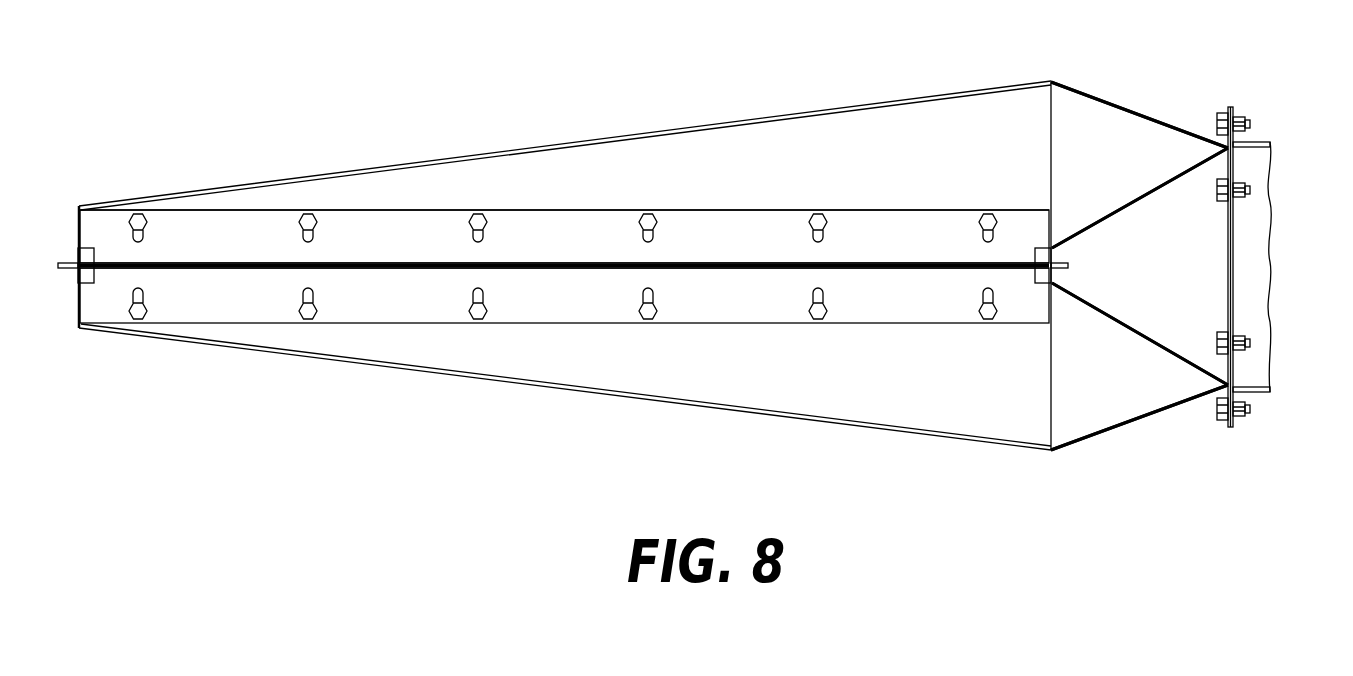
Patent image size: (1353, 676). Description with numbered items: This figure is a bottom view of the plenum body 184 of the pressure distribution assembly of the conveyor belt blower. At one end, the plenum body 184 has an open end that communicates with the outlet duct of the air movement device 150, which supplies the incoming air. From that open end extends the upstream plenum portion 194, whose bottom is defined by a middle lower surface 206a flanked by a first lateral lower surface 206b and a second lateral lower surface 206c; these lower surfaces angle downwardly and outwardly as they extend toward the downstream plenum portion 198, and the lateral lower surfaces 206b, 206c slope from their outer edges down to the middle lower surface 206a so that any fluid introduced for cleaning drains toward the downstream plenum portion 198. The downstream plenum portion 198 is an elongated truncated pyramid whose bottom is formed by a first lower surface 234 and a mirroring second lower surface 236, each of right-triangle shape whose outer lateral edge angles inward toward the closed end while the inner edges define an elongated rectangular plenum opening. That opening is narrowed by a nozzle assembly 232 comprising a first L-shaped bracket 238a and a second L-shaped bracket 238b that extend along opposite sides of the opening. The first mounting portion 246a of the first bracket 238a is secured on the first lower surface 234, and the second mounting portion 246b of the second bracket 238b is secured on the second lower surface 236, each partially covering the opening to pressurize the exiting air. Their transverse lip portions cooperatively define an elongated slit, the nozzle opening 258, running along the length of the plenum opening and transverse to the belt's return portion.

The air movement device 150 is at (1262, 140).
The plenum body 184 is at (478, 130).
The upstream plenum portion 194 is at (1115, 95).
The downstream plenum portion 198 is at (388, 165).
The middle lower surface 206a is at (1190, 263).
The first lateral lower surface 206b is at (1142, 135).
The second lateral lower surface 206c is at (1142, 397).
The nozzle assembly 232 is at (689, 245).
The downstream plenum portion first lower surface 234 is at (785, 147).
The downstream plenum portion second lower surface 236 is at (967, 417).
The first L-shaped bracket 238a is at (847, 207).
The second L-shaped bracket 238b is at (843, 325).
The first mounting portion 246a is at (918, 235).
The second mounting portion 246b is at (918, 293).
The nozzle opening 258 is at (720, 255).